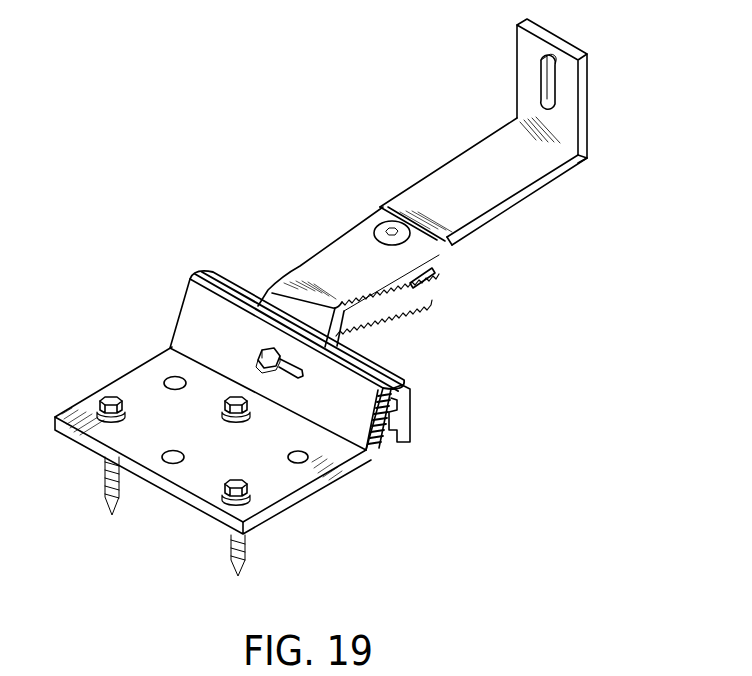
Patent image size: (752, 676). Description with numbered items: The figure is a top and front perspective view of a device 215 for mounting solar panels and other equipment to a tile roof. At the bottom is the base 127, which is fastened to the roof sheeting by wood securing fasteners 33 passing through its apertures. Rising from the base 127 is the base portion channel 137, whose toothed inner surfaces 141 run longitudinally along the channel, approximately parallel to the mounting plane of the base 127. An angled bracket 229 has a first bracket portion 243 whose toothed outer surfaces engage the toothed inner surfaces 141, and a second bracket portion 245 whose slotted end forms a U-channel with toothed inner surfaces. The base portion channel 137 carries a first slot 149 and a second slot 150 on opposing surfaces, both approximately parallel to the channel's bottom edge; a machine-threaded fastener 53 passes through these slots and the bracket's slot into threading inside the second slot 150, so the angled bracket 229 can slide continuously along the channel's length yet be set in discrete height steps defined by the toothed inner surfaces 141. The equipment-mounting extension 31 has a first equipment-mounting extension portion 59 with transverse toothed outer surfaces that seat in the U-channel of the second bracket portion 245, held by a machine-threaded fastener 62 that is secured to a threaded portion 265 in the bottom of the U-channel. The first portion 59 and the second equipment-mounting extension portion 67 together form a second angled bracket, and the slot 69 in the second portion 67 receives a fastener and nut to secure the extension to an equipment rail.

The device 215 is at (245, 126).
The equipment-mounting extension 31 is at (420, 161).
The second equipment-mounting extension portion 67 is at (574, 42).
The slot 69 is at (538, 87).
The first equipment-mounting extension portion 59 is at (490, 135).
The machine-threaded fastener 62 is at (381, 222).
The angled bracket 229 is at (326, 234).
The threaded portion 265 is at (438, 279).
The base portion channel 137 is at (205, 261).
The second bracket portion 245 is at (297, 265).
The first bracket portion 243 is at (256, 296).
The toothed inner surfaces 141 is at (404, 387).
The second slot 150 is at (412, 413).
The first slot 149 is at (258, 347).
The machine-threaded fastener 53 is at (285, 373).
The base 127 is at (140, 350).
The wood securing fasteners 33 is at (107, 396).